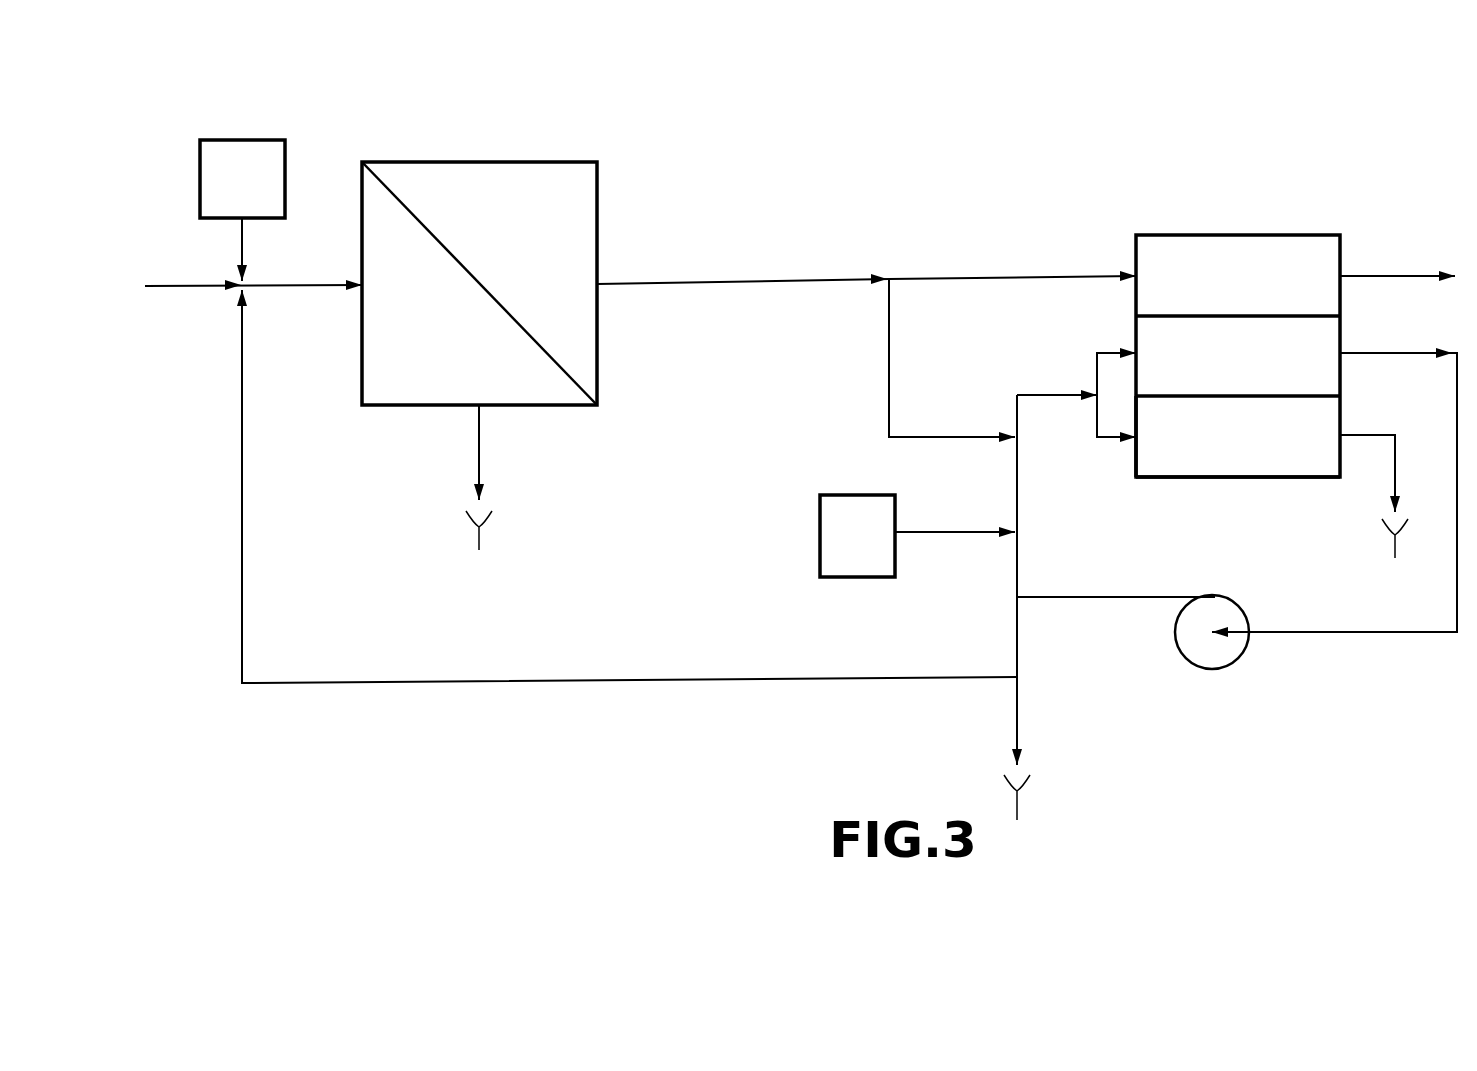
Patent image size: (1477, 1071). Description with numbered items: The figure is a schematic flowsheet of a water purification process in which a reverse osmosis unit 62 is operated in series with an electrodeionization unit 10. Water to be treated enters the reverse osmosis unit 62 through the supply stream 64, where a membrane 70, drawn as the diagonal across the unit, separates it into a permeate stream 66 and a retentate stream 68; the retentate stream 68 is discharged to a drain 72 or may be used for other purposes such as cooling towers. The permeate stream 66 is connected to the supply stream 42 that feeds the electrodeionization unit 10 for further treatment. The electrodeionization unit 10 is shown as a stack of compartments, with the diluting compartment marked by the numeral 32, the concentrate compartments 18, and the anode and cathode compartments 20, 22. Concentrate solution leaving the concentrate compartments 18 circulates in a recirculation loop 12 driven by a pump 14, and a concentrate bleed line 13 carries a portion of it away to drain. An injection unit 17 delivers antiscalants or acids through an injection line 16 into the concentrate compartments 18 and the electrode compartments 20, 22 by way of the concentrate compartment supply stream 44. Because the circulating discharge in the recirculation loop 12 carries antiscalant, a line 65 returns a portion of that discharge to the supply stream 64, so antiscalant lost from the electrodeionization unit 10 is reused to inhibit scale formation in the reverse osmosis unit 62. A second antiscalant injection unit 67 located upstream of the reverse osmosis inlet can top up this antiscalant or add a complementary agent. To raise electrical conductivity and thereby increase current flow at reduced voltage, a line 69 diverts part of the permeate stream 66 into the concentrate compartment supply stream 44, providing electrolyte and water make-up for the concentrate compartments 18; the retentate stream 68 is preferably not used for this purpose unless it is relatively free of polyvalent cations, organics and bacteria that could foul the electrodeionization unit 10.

The electrodeionization unit 10 is at (1238, 278).
The recirculation loop 12 is at (1422, 632).
The concentrate bleed line 13 is at (1020, 695).
The pump 14 is at (1222, 670).
The injection line 16 is at (932, 532).
The injection unit 17 is at (853, 577).
The concentrate compartments 18 is at (1275, 372).
The anode compartment 20 is at (1238, 440).
The cathode compartment 22 is at (1275, 472).
The diluting compartment 32 is at (1275, 295).
The supply stream 42 is at (995, 277).
The concentrate compartment supply stream 44 is at (1097, 375).
The reverse osmosis unit 62 is at (508, 156).
The supply stream 64 is at (178, 286).
The line 65 is at (242, 600).
The permeate stream 66 is at (708, 278).
The second antiscalant injection unit 67 is at (228, 140).
The retentate stream 68 is at (481, 447).
The line 69 is at (889, 372).
The membrane 70 is at (410, 212).
The drain 72 is at (481, 542).